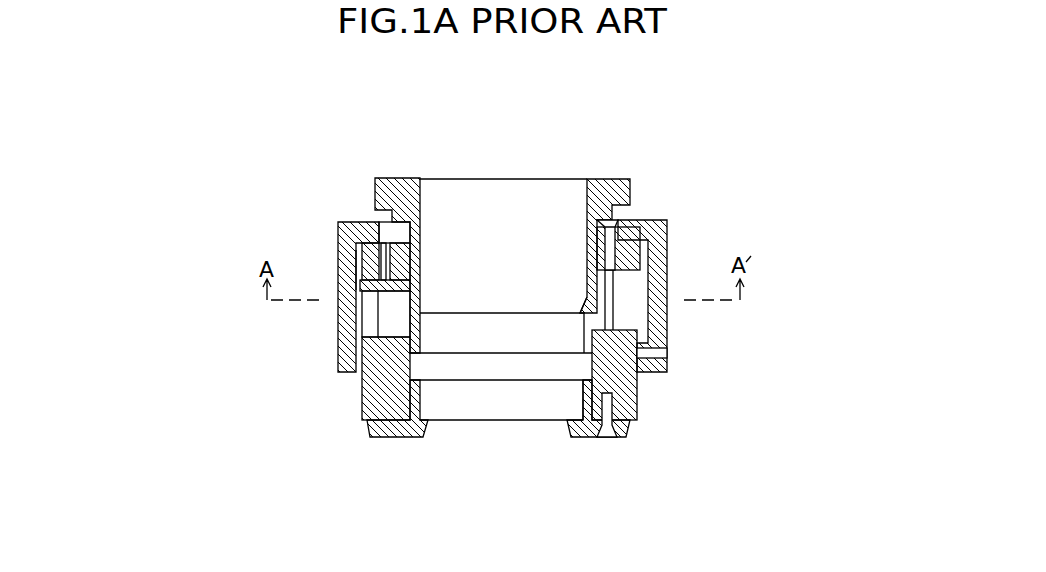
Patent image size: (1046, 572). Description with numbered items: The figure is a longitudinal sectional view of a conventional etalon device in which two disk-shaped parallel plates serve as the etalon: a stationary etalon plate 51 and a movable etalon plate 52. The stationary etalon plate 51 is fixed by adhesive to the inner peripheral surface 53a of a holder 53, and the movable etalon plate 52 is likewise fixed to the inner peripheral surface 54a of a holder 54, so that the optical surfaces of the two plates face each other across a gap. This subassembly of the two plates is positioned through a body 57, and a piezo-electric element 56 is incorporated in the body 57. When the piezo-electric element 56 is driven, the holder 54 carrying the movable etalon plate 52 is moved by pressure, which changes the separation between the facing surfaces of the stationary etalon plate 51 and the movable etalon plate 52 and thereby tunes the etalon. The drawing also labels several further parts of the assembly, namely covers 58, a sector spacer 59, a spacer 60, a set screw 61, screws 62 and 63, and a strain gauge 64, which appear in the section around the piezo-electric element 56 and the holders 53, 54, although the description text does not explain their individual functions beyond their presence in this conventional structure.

The stationary etalon plate 51 is at (492, 410).
The movable etalon plate 52 is at (490, 328).
The holder 53 is at (380, 437).
The inner peripheral surface 53a is at (560, 425).
The holder 54 is at (615, 196).
The inner peripheral surface 54a is at (582, 317).
The piezo-electric element 56 is at (393, 303).
The body 57 is at (362, 420).
The cover 58 is at (338, 323).
The sector spacer 59 is at (362, 395).
The spacer 60 is at (378, 277).
The set screw 61 is at (380, 226).
The screw 62 is at (612, 440).
The screw 63 is at (618, 222).
The strain gauge 64 is at (338, 360).